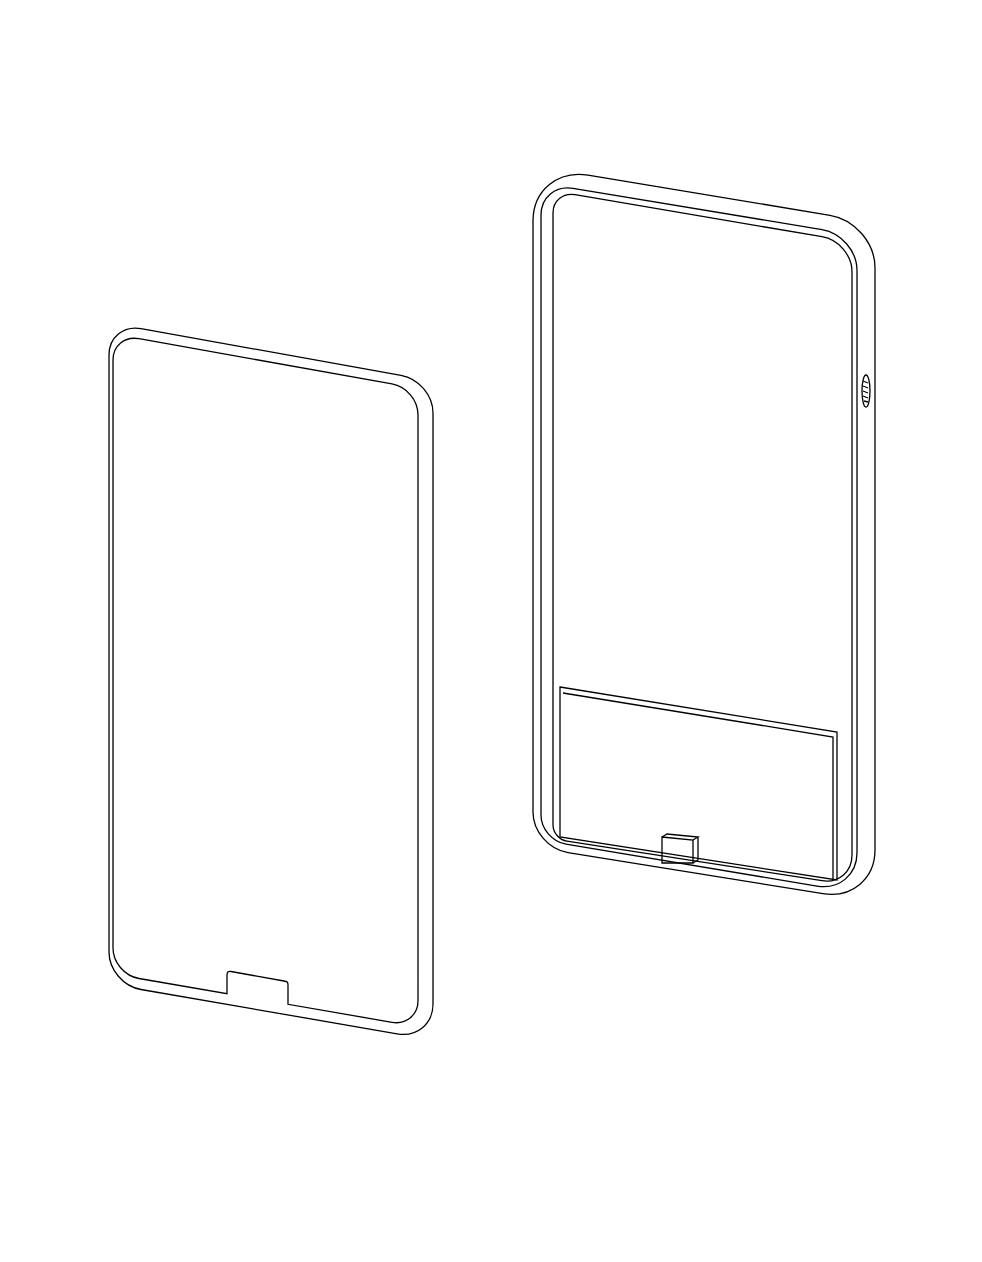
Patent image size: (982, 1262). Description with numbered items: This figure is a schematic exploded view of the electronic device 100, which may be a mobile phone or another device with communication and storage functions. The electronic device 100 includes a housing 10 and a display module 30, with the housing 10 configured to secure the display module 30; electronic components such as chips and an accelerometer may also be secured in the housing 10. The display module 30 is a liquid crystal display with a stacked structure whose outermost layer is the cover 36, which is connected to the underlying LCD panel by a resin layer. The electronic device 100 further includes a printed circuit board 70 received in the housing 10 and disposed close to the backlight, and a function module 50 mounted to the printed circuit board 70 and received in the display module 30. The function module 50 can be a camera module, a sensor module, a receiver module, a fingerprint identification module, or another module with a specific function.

The electronic device 100 is at (153, 50).
The housing 10 is at (523, 142).
The display module 30 is at (197, 288).
The cover 36 is at (145, 733).
The function module 50 is at (673, 851).
The printed circuit board 70 is at (732, 833).